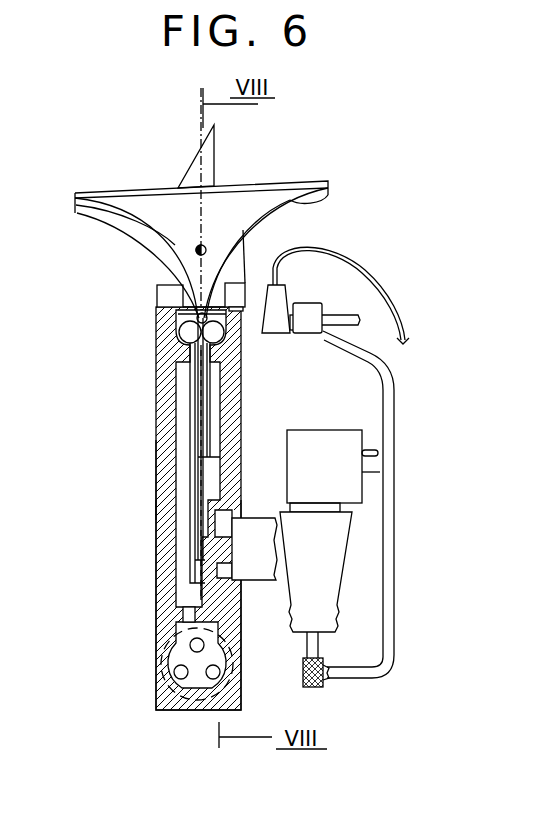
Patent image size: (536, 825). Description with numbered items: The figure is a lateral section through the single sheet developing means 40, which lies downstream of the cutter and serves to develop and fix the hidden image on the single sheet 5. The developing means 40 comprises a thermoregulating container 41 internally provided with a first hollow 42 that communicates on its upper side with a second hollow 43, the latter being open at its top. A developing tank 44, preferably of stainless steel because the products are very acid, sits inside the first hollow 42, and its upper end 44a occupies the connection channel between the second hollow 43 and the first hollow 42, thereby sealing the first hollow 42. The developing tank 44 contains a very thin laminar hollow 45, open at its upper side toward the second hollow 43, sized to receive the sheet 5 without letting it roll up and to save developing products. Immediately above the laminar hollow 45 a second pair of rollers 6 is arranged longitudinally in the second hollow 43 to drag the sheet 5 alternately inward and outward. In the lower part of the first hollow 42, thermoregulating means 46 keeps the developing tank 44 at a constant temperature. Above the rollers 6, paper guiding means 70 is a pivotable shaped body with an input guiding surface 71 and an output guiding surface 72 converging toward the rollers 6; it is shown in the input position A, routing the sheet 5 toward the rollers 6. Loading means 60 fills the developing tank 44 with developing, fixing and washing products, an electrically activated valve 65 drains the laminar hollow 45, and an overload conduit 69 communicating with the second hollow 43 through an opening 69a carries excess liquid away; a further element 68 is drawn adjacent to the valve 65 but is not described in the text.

The single sheet 5 is at (145, 233).
The second pair of rollers 6 is at (245, 280).
The single sheet developing means 40 is at (356, 254).
The thermoregulating container 41 is at (157, 423).
The first hollow 42 is at (157, 527).
The second hollow 43 is at (178, 320).
The developing tank 44 is at (157, 386).
The upper end of the developing tank 44a is at (157, 353).
The laminar hollow 45 is at (157, 487).
The thermoregulating means 46 is at (155, 653).
The loading means of developing products 60 is at (326, 294).
The electrically activated valve 65 is at (330, 565).
The mounting block 68 is at (243, 580).
The overload conduit 69 is at (387, 372).
The opening 69a is at (196, 312).
The paper guiding means 70 is at (165, 178).
The input guiding surface 71 is at (123, 212).
The output guiding surface 72 is at (330, 200).
The input position A is at (268, 178).